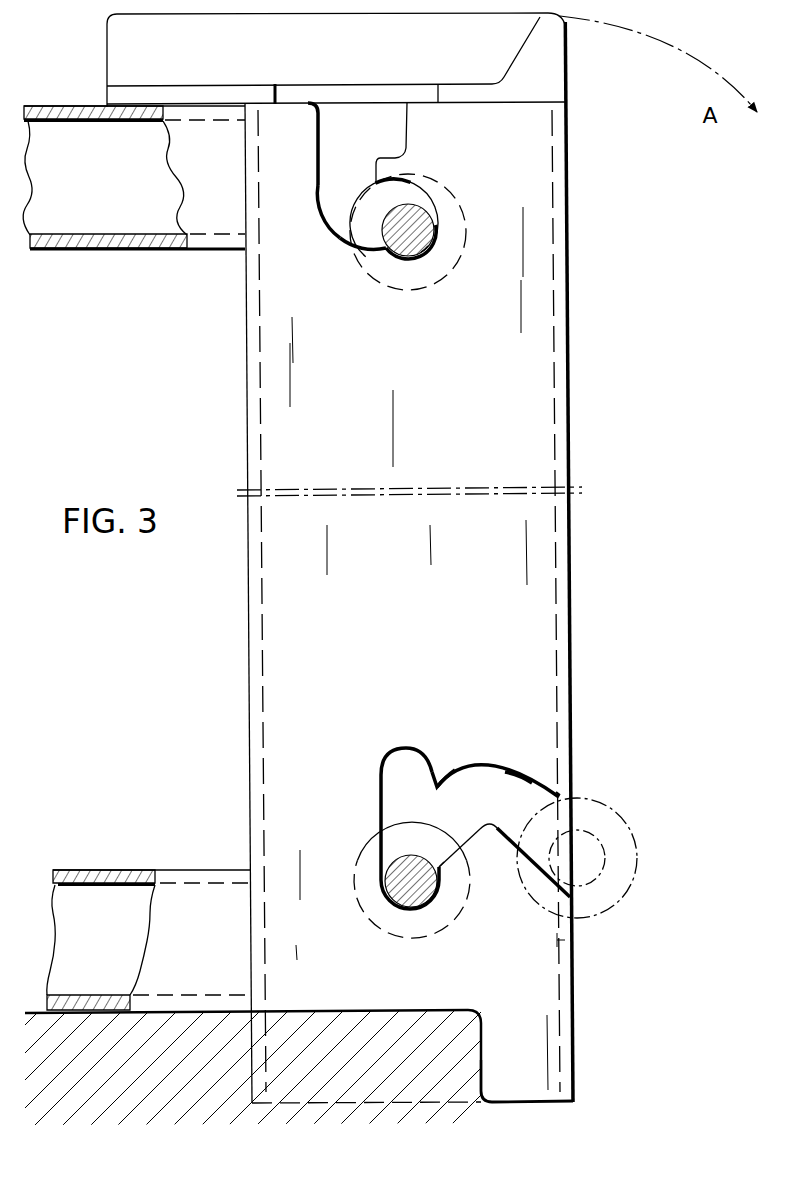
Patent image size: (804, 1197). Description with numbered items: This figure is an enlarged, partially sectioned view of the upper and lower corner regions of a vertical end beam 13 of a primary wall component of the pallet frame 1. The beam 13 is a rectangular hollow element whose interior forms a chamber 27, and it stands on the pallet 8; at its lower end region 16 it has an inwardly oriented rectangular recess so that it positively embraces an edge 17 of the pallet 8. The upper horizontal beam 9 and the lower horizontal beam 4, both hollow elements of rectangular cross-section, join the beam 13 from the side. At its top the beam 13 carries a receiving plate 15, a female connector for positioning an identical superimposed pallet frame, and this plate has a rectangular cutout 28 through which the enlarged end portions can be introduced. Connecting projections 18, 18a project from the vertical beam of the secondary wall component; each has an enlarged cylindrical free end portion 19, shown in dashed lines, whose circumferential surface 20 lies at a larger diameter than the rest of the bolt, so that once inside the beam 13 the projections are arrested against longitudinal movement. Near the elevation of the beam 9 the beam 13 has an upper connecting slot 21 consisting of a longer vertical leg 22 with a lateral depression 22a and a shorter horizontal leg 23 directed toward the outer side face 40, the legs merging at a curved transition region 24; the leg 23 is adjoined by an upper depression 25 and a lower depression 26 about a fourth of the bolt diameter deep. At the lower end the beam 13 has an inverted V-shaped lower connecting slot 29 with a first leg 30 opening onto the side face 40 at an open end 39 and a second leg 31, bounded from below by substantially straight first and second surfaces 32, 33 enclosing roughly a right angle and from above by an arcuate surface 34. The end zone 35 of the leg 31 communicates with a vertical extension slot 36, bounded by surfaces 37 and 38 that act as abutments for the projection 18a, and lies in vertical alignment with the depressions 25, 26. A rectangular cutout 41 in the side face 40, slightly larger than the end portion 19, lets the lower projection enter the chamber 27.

The pallet frame 1 is at (374, 562).
The horizontal beam 4 is at (124, 893).
The pallet 8 is at (137, 1072).
The upper horizontal beam 9 is at (87, 205).
The vertical end beam 13 is at (532, 388).
The receiving plate 15 is at (122, 53).
The lower end region 16 is at (534, 1045).
The edge 17 is at (443, 1063).
The connecting projection 18 is at (419, 230).
The connecting projection 18a is at (428, 905).
The enlarged cylindrical free end portion 19 is at (425, 250).
The circumferential surface 20 is at (453, 190).
The upper connecting slot 21 is at (337, 208).
The vertical leg 22 is at (353, 212).
The lateral depression 22a is at (398, 130).
The horizontal leg 23 is at (428, 198).
The curved transition region 24 is at (340, 192).
The upper depression 25 is at (413, 185).
The lower depression 26 is at (400, 256).
The chamber 27 is at (266, 398).
The rectangular cutout 28 is at (318, 97).
The lower connecting slot 29 is at (523, 784).
The first leg 30 is at (563, 792).
The second leg 31 is at (460, 778).
The first surface 32 is at (535, 855).
The second surface 33 is at (483, 826).
The arcuate surface 34 is at (511, 768).
The end zone 35 is at (410, 905).
The vertical extension slot 36 is at (403, 793).
The abutment surface 37 is at (437, 778).
The abutment surface 38 is at (440, 882).
The open end 39 is at (576, 821).
The outer side face 40 is at (581, 608).
The rectangular cutout 41 is at (562, 940).